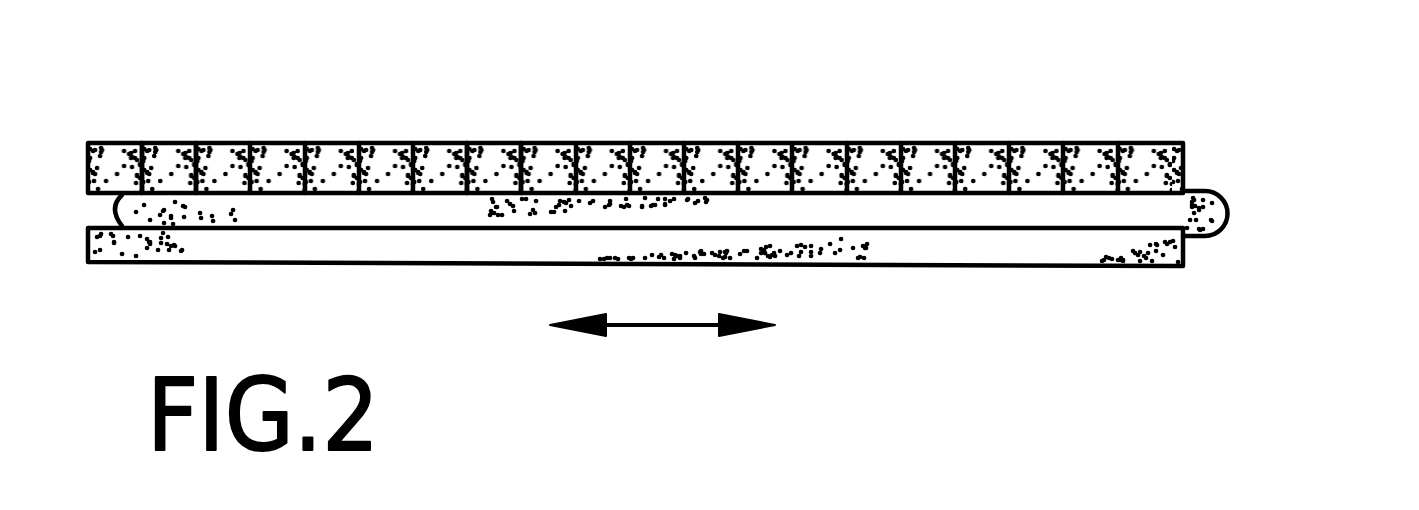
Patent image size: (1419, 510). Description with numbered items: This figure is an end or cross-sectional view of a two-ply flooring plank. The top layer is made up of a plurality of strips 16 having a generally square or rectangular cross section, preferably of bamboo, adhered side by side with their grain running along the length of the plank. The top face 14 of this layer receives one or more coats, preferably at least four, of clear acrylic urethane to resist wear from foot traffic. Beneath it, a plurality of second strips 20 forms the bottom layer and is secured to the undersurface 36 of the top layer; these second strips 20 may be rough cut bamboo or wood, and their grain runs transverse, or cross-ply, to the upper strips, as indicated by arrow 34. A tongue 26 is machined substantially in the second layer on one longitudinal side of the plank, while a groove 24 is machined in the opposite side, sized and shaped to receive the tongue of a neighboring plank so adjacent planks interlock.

The top face 14 is at (848, 145).
The strips 16 is at (272, 143).
The second strips 20 is at (945, 253).
The groove 24 is at (100, 207).
The tongue 26 is at (1222, 212).
The arrow 34 is at (663, 327).
The undersurface 36 is at (443, 195).